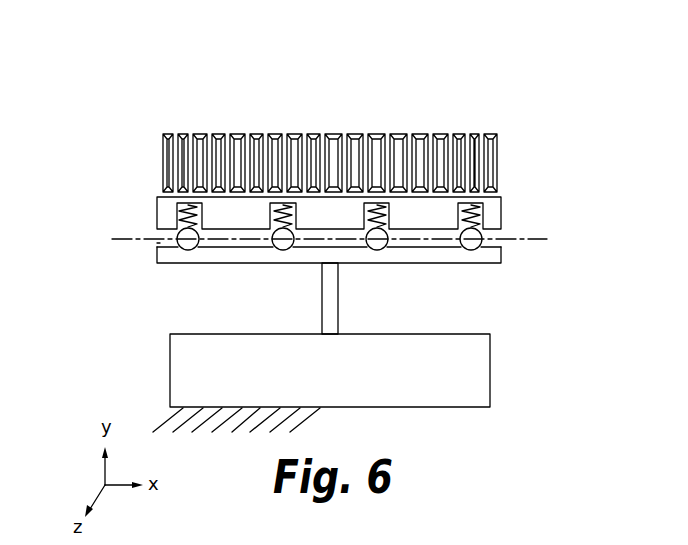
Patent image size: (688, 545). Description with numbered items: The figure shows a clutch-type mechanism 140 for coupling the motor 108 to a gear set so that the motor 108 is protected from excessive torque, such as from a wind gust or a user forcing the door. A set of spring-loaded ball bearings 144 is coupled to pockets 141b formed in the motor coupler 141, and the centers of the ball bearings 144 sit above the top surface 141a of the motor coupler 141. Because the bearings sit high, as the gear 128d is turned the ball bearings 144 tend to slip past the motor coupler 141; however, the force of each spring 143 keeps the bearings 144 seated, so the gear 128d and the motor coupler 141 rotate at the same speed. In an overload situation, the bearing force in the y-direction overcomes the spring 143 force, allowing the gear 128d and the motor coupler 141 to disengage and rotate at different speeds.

The gear 128d is at (315, 122).
The clutch-type mechanism 140 is at (110, 185).
The motor coupler 141 is at (502, 258).
The top surface 141a is at (158, 242).
The pockets 141b is at (190, 252).
The spring 143 is at (483, 214).
The ball bearings 144 is at (484, 236).
The motor 108 is at (408, 382).